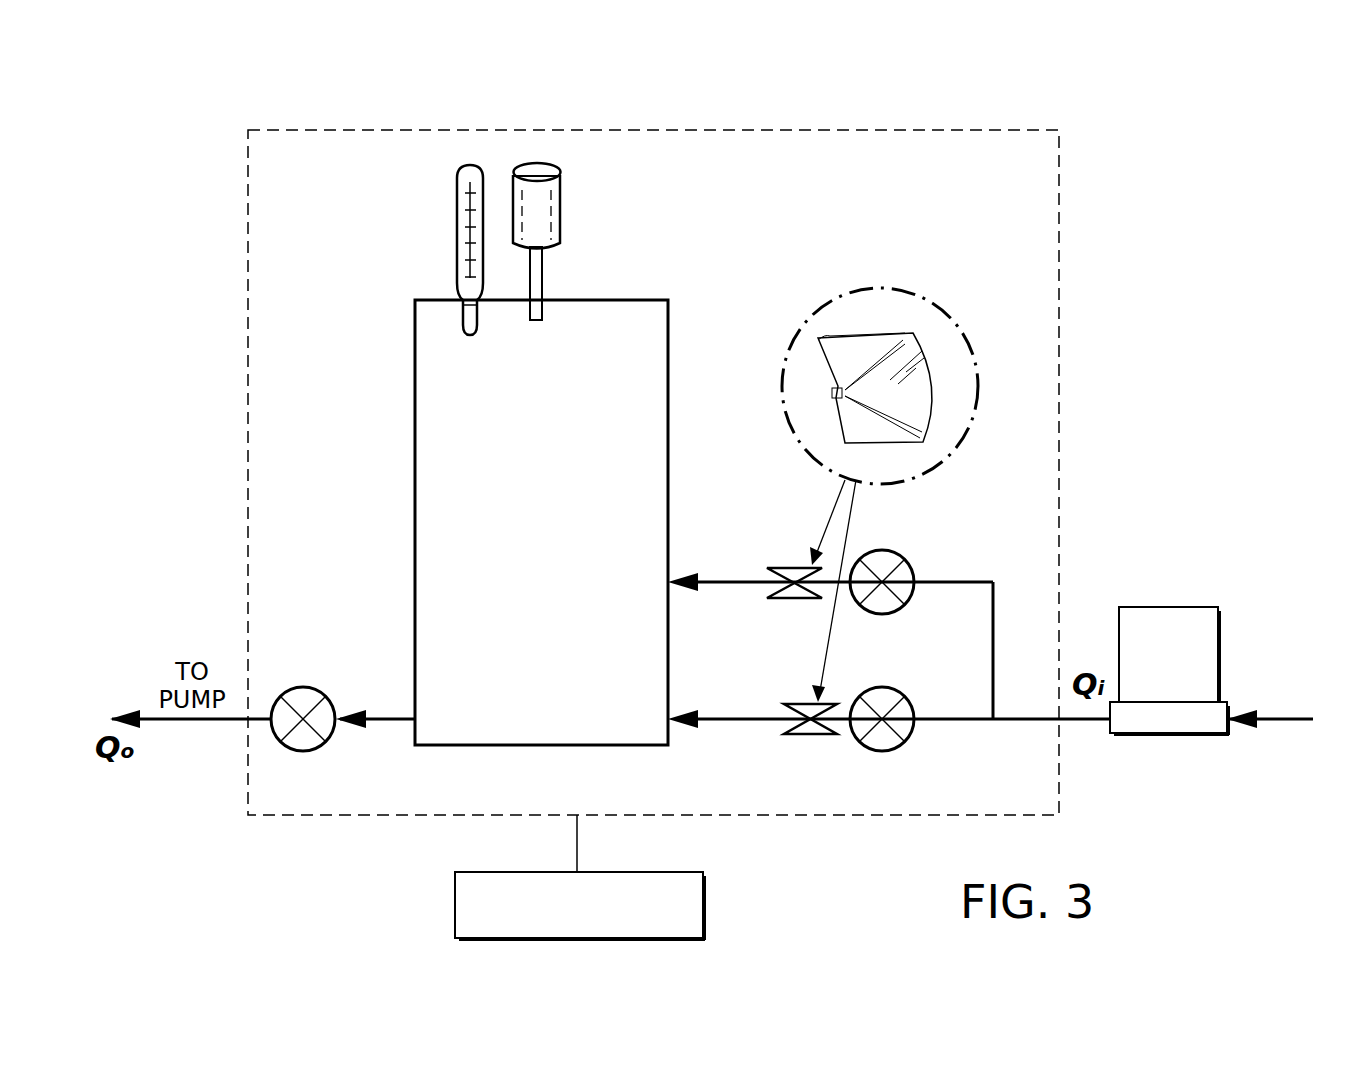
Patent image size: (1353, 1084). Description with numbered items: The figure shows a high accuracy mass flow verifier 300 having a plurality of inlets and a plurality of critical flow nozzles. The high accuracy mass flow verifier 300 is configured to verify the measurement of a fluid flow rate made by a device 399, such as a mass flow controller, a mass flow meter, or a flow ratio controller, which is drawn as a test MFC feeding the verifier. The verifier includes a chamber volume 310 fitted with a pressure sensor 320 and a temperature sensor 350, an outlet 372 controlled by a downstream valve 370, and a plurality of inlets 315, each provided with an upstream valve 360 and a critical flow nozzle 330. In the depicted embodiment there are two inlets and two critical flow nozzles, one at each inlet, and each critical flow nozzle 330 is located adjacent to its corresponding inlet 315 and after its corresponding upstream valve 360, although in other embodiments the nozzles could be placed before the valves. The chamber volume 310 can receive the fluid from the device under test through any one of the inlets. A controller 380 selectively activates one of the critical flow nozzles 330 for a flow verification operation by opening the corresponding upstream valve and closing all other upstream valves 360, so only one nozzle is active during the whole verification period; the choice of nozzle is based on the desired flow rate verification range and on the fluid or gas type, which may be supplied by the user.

The high accuracy mass flow verifier 300 is at (957, 122).
The chamber volume 310 is at (633, 300).
The inlets 315 is at (668, 583).
The pressure sensor 320 is at (548, 165).
The critical flow nozzles 330 is at (790, 600).
The temperature sensor 350 is at (455, 175).
The upstream valves 360 is at (882, 616).
The downstream valve 370 is at (302, 687).
The outlet 372 is at (415, 690).
The controller 380 is at (705, 905).
The device 399 is at (1178, 607).